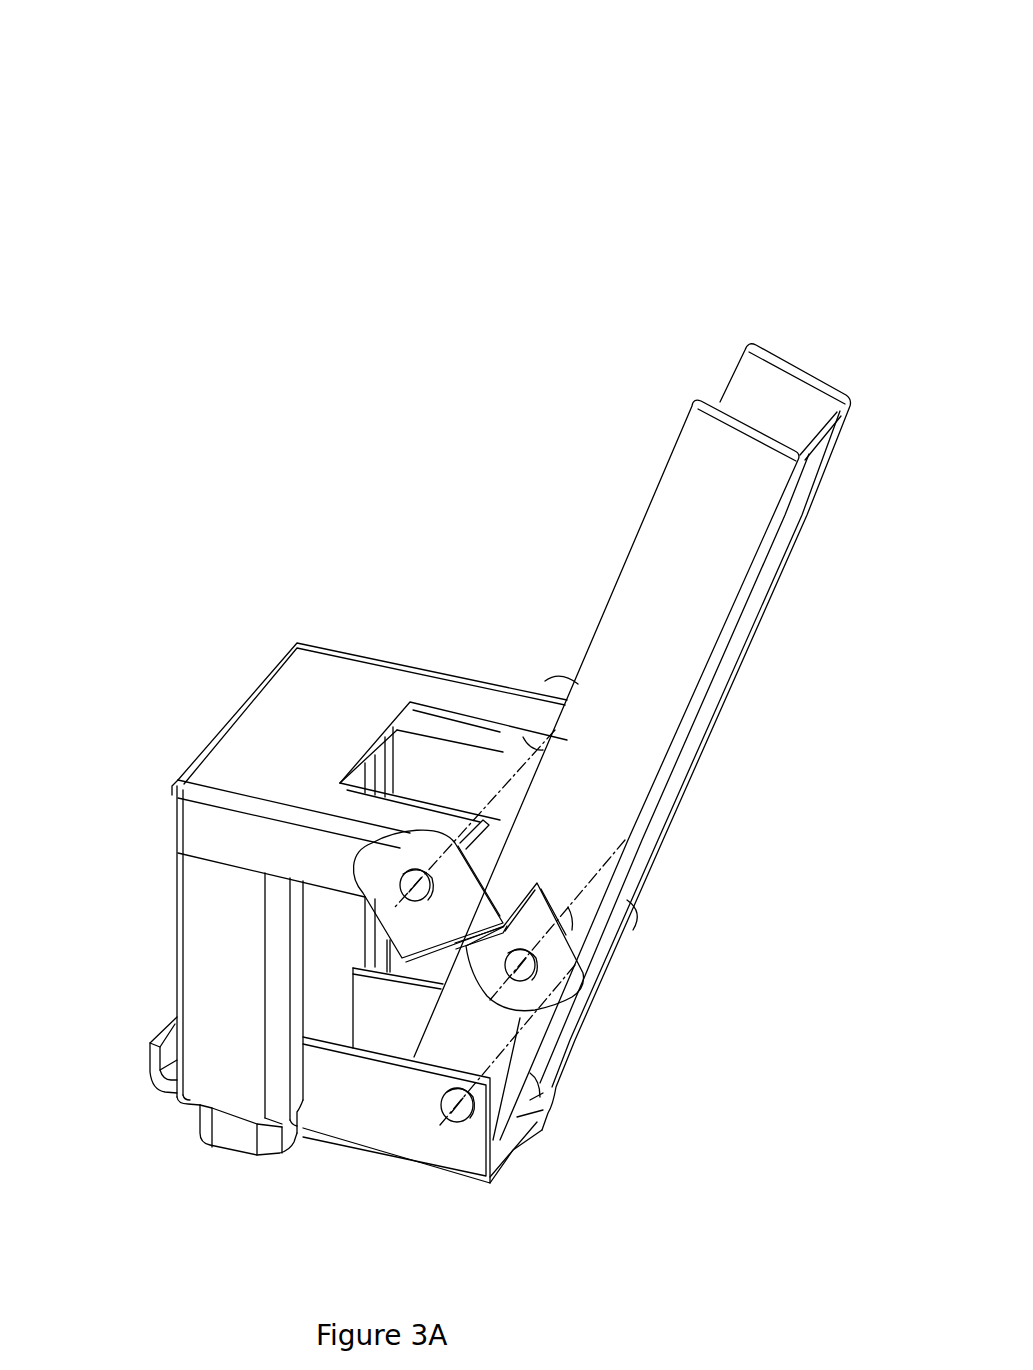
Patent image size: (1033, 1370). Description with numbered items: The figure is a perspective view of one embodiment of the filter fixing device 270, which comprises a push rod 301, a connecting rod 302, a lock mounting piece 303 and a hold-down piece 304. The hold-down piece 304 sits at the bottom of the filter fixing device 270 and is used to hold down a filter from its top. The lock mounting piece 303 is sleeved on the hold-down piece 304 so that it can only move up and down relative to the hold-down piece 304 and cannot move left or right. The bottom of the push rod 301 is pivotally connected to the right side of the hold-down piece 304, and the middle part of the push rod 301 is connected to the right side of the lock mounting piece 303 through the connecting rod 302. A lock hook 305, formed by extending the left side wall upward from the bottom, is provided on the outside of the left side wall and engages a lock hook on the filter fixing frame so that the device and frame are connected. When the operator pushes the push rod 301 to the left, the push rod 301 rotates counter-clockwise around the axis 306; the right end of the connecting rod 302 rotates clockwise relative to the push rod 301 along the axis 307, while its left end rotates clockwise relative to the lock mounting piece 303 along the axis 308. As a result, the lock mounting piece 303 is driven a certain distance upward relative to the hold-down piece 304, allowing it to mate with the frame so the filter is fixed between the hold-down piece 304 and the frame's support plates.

The filter fixing device 270 is at (772, 108).
The push rod 301 is at (730, 551).
The connecting rod 302 is at (550, 690).
The lock mounting piece 303 is at (232, 718).
The hold-down piece 304 is at (393, 1137).
The lock hook 305 is at (150, 1040).
The axis 306 is at (497, 1060).
The axis 307 is at (568, 907).
The axis 308 is at (503, 773).